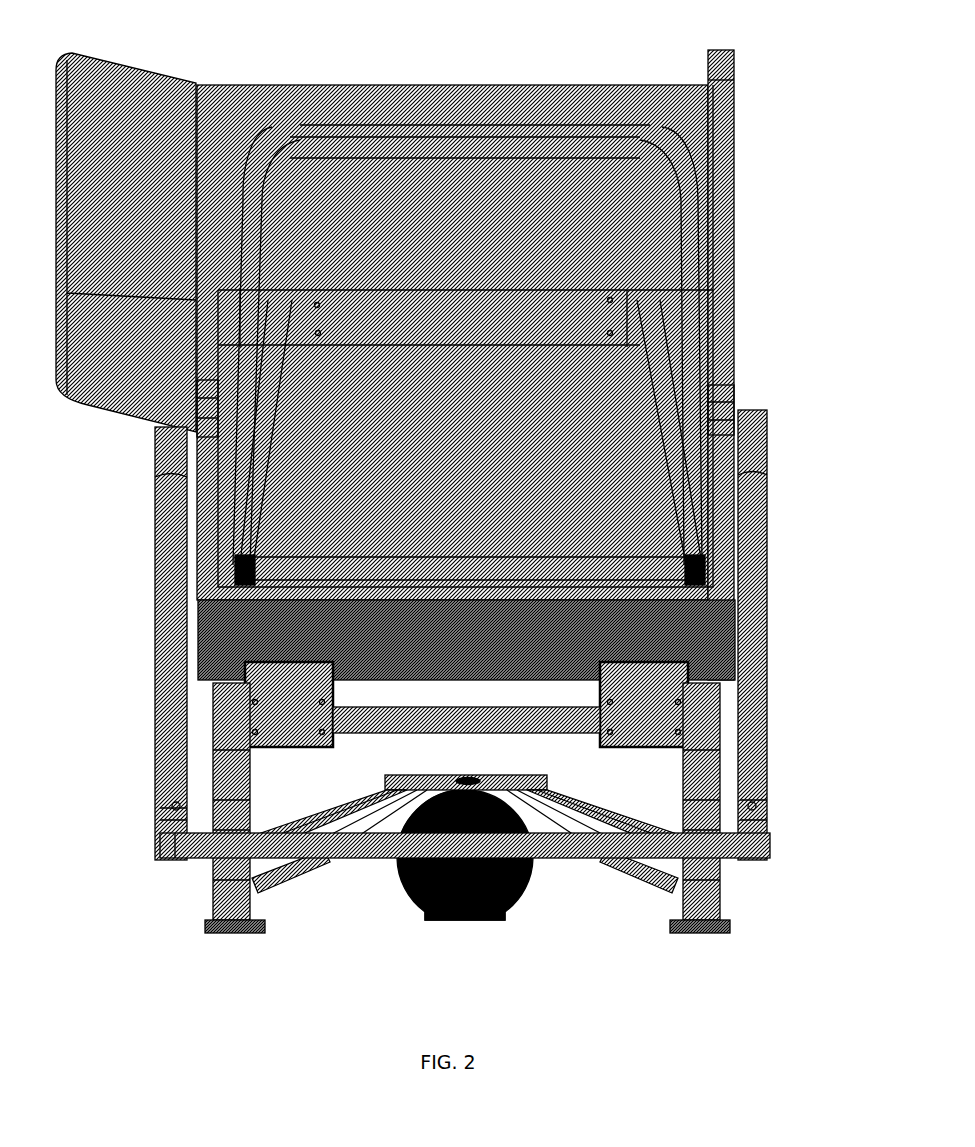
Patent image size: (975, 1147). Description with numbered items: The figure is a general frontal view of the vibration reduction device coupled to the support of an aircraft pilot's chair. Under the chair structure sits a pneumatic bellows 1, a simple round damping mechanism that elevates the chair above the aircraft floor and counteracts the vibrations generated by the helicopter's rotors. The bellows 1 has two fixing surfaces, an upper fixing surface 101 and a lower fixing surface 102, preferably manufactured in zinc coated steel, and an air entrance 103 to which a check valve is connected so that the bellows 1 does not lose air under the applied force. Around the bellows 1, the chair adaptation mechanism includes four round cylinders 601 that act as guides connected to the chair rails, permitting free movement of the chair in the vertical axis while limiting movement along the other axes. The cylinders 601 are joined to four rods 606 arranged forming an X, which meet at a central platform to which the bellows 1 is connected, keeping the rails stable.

The pneumatic bellows 1 is at (520, 893).
The upper fixing surface 101 is at (404, 887).
The lower fixing surface 102 is at (471, 921).
The air entrance 103 is at (440, 781).
The round cylinders 601 is at (208, 897).
The rods 606 is at (293, 880).